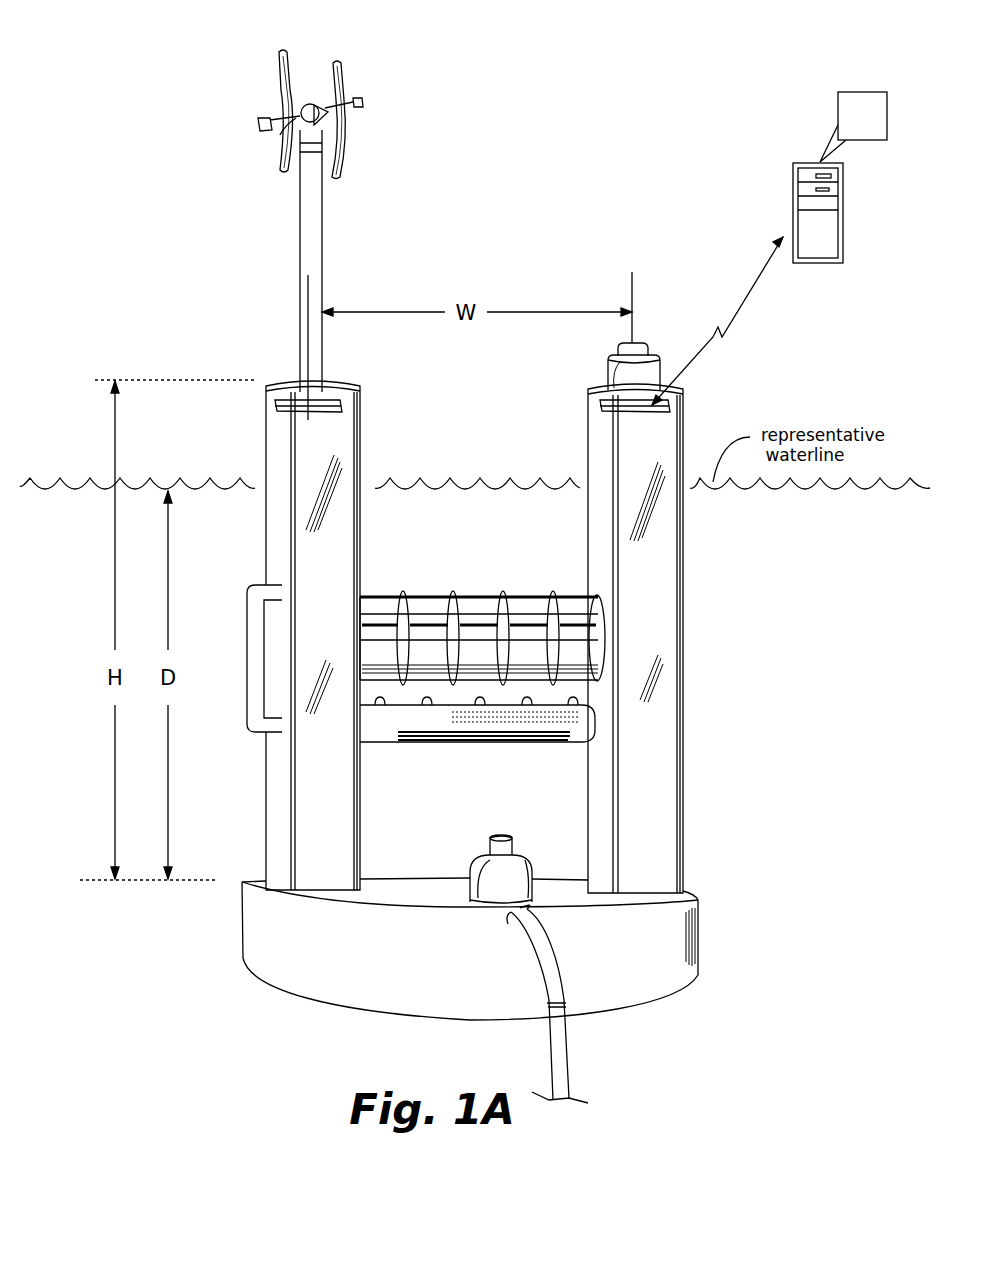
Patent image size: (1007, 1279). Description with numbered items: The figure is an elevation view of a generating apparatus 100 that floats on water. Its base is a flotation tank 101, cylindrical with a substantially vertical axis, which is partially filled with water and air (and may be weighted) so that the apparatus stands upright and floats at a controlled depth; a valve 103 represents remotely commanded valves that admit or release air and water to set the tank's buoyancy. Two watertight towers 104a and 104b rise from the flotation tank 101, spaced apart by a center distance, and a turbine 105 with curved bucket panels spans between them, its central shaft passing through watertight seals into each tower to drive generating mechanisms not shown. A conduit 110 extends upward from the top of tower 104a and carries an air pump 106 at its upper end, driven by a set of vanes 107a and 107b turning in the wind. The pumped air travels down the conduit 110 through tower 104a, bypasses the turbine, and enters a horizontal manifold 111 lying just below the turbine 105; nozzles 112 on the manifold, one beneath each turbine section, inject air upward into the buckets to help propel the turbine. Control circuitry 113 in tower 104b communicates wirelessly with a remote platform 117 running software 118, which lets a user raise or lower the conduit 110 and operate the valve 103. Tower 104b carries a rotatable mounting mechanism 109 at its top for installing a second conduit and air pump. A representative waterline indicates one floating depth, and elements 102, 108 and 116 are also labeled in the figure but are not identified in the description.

The generating apparatus 100 is at (538, 300).
The flotation tank 101 is at (702, 952).
The cable 102 is at (545, 950).
The valve 103 is at (477, 878).
The tower 104a is at (360, 517).
The tower 104b is at (683, 508).
The turbine 105 is at (460, 592).
The air pump 106 is at (310, 100).
The vane 107a is at (275, 60).
The vane 107b is at (363, 105).
The wind turbine 108 is at (307, 123).
The rotatable mounting mechanism 109 is at (636, 340).
The conduit 110 is at (323, 232).
The horizontal manifold 111 is at (520, 740).
The nozzles 112 is at (420, 705).
The control circuitry 113 is at (629, 400).
The bracket 116 is at (320, 398).
The remote platform 117 is at (811, 163).
The software 118 is at (838, 112).